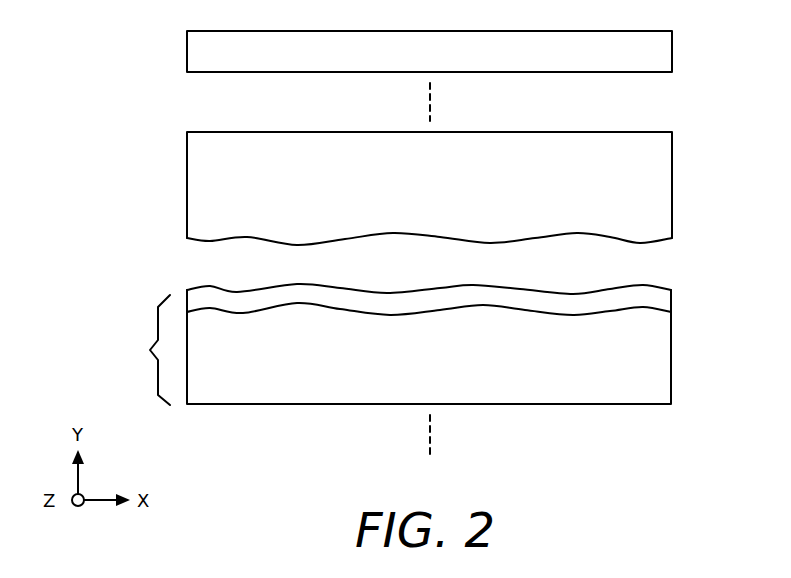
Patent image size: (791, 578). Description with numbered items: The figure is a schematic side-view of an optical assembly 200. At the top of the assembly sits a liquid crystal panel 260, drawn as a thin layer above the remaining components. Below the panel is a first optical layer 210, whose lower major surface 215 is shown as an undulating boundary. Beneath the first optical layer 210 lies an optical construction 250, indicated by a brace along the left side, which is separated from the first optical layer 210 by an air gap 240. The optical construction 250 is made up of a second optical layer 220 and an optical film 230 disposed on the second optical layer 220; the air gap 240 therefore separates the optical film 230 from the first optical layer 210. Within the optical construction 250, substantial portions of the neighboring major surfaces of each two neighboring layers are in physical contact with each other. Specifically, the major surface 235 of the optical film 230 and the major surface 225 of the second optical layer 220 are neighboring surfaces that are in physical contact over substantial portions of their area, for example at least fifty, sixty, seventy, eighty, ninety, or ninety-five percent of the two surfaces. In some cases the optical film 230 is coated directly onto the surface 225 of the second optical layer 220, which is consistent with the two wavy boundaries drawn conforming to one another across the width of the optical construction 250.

The optical assembly 200 is at (97, 76).
The liquid crystal panel 260 is at (657, 46).
The first optical layer 210 is at (438, 206).
The major surface 215 is at (213, 241).
The air gap 240 is at (657, 263).
The optical film 230 is at (471, 332).
The major surface 235 is at (332, 311).
The major surface 225 is at (530, 312).
The second optical layer 220 is at (471, 354).
The optical construction 250 is at (429, 344).